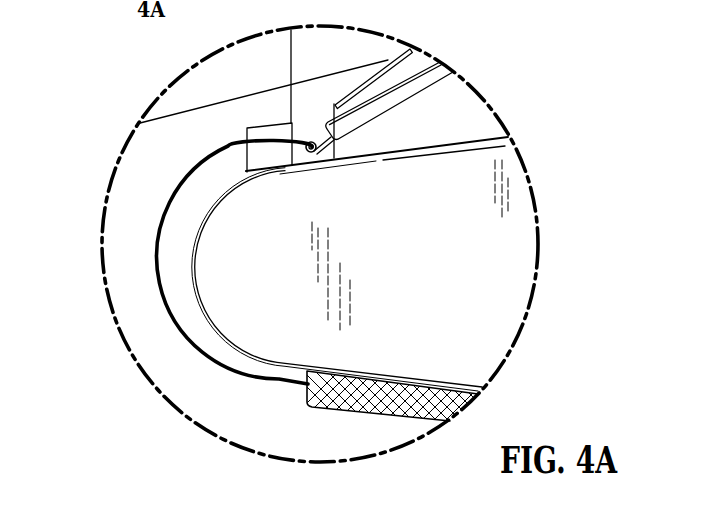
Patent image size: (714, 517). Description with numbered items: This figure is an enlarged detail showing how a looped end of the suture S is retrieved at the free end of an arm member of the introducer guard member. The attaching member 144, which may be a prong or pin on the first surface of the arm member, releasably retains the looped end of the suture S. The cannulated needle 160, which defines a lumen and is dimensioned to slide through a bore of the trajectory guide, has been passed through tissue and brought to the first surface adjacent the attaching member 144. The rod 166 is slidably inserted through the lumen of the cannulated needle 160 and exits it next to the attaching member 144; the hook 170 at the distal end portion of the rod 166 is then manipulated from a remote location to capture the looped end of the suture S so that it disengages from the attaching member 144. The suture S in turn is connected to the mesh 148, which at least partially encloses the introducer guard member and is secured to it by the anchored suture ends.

The suture S is at (157, 233).
The attaching member 144 is at (248, 129).
The hook 170 is at (310, 140).
The rod 166 is at (387, 90).
The cannulated needle 160 is at (397, 113).
The mesh 148 is at (362, 408).